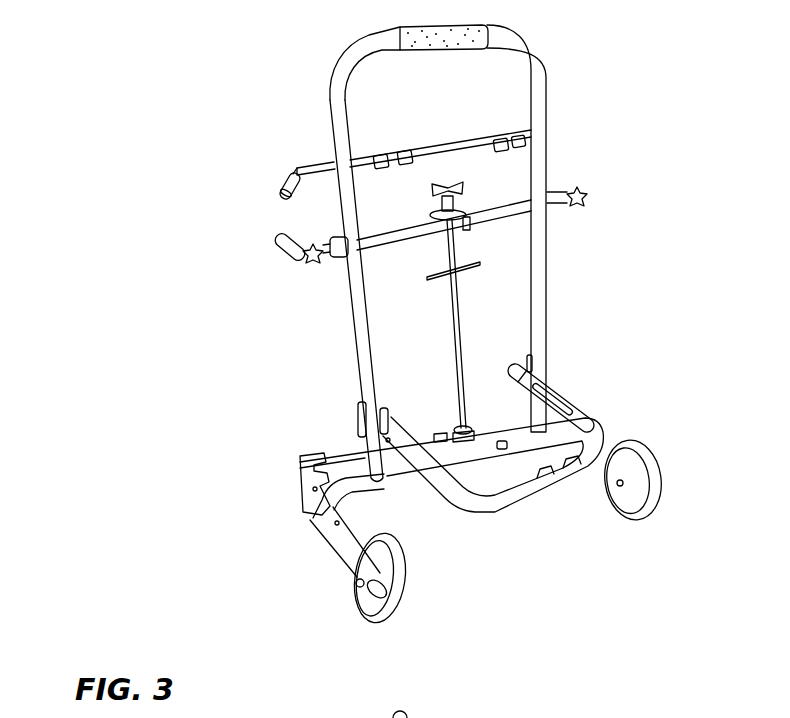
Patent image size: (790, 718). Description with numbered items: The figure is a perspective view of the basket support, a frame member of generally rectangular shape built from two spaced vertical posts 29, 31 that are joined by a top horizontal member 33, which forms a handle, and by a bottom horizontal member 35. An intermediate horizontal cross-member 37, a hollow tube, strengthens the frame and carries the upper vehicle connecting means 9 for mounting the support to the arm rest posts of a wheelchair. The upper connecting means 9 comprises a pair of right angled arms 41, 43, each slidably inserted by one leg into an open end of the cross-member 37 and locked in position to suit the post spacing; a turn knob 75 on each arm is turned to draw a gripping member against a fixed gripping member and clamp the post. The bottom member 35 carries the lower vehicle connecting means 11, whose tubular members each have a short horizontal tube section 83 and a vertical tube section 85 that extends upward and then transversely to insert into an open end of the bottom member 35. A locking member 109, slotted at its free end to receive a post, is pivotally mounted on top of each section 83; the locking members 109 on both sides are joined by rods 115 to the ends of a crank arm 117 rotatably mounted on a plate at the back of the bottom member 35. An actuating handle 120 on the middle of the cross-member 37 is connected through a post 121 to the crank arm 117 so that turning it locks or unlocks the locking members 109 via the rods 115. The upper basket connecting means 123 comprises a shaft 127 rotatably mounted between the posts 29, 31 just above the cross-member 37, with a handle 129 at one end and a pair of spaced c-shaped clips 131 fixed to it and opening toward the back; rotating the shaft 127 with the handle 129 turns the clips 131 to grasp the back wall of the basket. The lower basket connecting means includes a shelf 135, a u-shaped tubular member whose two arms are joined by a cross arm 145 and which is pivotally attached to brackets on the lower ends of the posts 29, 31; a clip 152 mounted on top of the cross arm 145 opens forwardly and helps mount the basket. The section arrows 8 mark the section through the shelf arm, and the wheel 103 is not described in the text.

The section line 8-8 / slotted bracket 8 is at (540, 342).
The upper vehicle connecting means 9 is at (273, 262).
The lower vehicle connecting means 11 is at (290, 503).
The vertical post 29 is at (353, 327).
The vertical post 31 is at (543, 267).
The top horizontal member 33 is at (367, 35).
The bottom horizontal member 35 is at (405, 468).
The intermediate horizontal cross-member 37 is at (364, 228).
The right angled arm 41 is at (273, 243).
The right angled arm 43 is at (562, 210).
The turn knob 75 is at (308, 263).
The short horizontal tube section 83 is at (313, 510).
The vertical tube section 85 is at (327, 520).
The wheel 103 is at (637, 503).
The locking member 109 is at (297, 462).
The rod 115 is at (363, 450).
The crank arm 117 is at (445, 430).
The actuating handle 120 is at (457, 183).
The post 121 is at (460, 322).
The upper basket connecting means 123 is at (283, 185).
The shaft 127 is at (430, 147).
The handle 129 is at (290, 193).
The c-shaped clip 131 is at (380, 167).
The shelf 135 is at (487, 516).
The cross arm 145 is at (536, 498).
The clip 152 is at (592, 472).